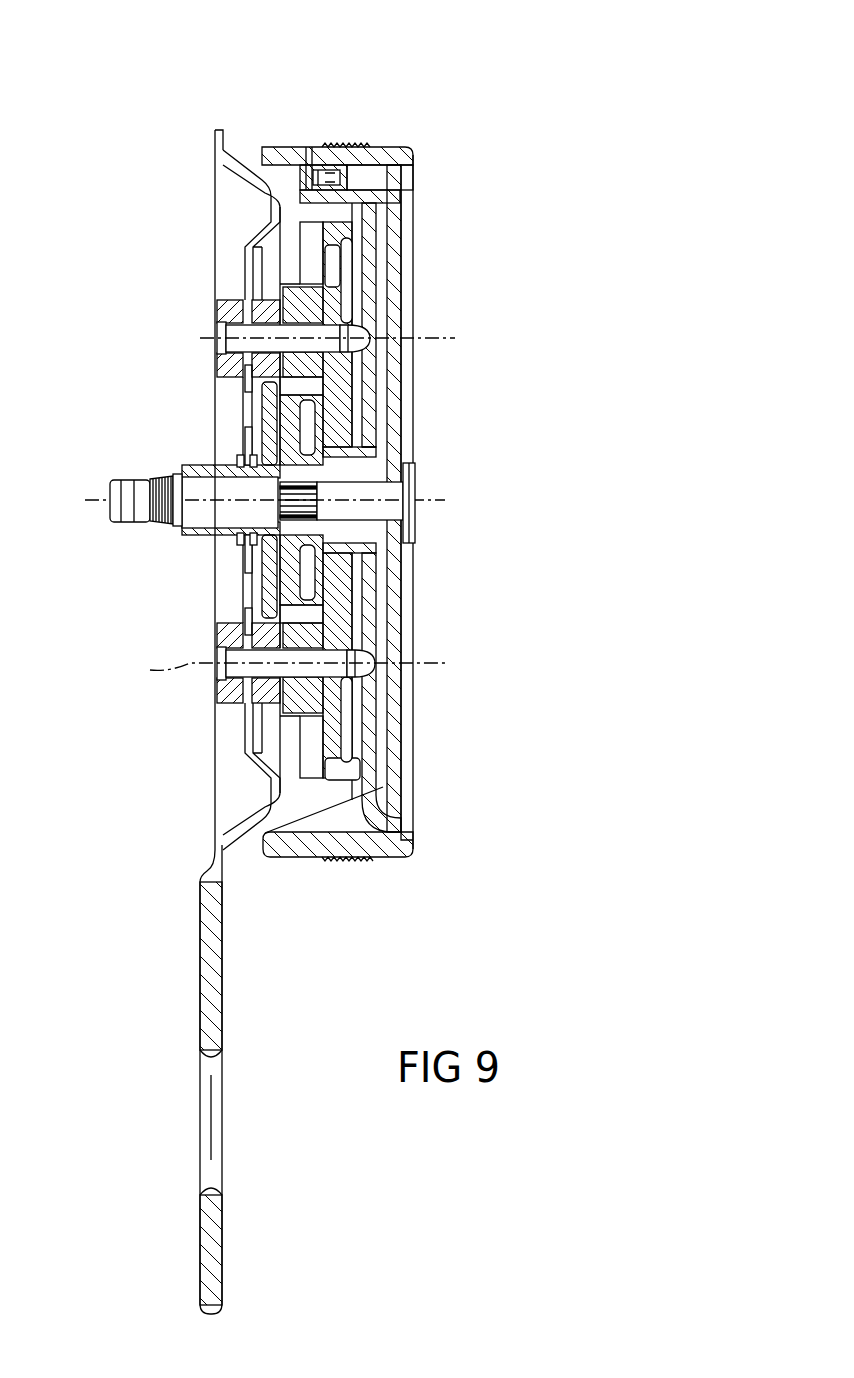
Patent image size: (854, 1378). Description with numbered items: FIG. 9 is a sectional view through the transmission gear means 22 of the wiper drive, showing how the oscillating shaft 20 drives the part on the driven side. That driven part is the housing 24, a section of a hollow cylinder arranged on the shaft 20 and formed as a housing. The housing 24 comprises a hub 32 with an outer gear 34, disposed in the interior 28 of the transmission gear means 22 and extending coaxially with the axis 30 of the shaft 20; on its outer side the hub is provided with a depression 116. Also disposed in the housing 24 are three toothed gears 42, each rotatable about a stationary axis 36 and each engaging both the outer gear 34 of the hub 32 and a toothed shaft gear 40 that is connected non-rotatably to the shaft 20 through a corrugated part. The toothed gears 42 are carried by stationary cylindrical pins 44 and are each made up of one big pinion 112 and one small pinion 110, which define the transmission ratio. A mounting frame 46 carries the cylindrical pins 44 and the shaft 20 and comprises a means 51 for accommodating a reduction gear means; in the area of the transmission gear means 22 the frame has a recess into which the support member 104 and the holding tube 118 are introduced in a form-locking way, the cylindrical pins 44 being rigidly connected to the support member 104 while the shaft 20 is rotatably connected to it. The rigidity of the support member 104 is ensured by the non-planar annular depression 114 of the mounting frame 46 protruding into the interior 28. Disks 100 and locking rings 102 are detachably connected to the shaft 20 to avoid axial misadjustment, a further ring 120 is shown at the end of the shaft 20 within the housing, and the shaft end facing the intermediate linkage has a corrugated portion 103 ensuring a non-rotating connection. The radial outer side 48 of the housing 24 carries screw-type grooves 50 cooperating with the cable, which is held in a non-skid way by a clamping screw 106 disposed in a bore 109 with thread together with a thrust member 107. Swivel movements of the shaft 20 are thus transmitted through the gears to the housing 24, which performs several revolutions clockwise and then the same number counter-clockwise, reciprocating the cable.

The shaft 20 is at (210, 518).
The transmission gear means 22 is at (437, 90).
The housing 24 is at (272, 148).
The interior 28 is at (330, 797).
The axis 30 is at (88, 505).
The hub 32 is at (372, 543).
The outer gear 34 is at (370, 558).
The stationary axis 36 is at (300, 505).
The toothed shaft gear 40 is at (280, 405).
The toothed gears 42 is at (350, 295).
The cylindrical pins 44 is at (350, 330).
The mounting frame 46 is at (222, 912).
The radial outer side 48 is at (285, 857).
The screw-type grooves 50 is at (343, 878).
The means for accommodating a reduction gear means 51 is at (225, 1110).
The disks 100 is at (273, 303).
The locking rings 102 is at (340, 490).
The corrugated portion 103 is at (157, 483).
The support member 104 is at (265, 420).
The clamping screw 106 is at (333, 175).
The thrust member 107 is at (297, 170).
The bore with thread 109 is at (405, 175).
The small pinion 110 is at (303, 283).
The big pinion 112 is at (365, 225).
The annular depression 114 is at (265, 205).
The depression 116 is at (405, 832).
The holding tube 118 is at (215, 470).
The snap ring 120 is at (412, 478).